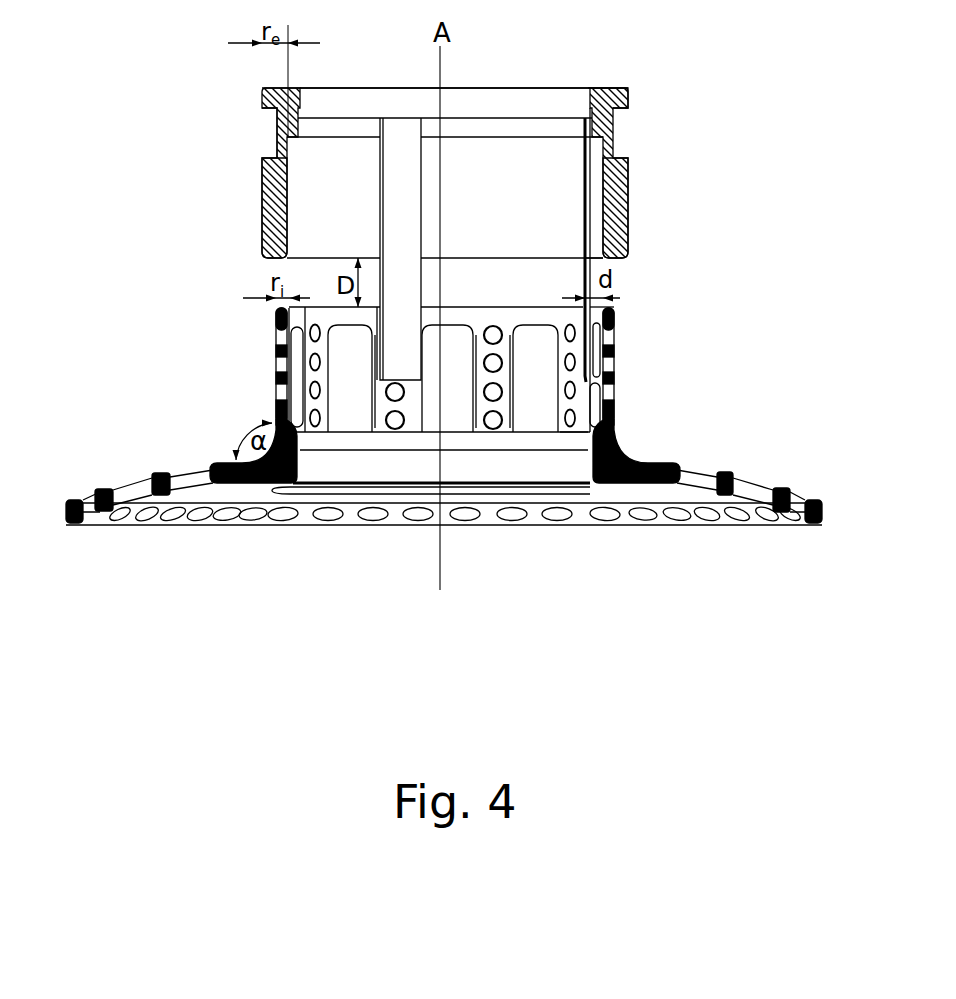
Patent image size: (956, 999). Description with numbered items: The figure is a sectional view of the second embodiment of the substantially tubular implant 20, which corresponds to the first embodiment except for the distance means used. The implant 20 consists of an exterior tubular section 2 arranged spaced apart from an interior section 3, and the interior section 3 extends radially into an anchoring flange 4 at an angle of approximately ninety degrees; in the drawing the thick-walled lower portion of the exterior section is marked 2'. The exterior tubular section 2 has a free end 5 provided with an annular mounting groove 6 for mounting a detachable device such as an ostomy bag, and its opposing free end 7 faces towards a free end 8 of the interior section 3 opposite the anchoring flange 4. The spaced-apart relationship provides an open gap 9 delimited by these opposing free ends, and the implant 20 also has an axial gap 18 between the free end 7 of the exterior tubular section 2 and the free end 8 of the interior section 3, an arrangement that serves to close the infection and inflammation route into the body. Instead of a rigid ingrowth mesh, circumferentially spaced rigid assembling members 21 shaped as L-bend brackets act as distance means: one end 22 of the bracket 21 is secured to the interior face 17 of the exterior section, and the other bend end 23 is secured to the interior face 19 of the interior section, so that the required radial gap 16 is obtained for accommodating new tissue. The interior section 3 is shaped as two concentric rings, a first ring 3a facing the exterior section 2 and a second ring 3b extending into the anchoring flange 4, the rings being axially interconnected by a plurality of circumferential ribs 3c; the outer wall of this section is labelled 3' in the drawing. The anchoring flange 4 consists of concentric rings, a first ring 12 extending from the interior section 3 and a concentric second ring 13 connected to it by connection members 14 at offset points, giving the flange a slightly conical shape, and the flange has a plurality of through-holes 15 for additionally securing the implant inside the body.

The implant 20 is at (173, 83).
The exterior tubular section 2 is at (401, 173).
The cap skirt wall 2' is at (237, 208).
The annular mounting groove 6 is at (278, 128).
The interior face of the exterior tubular section 17 is at (604, 188).
The end of the L-bracket 22 is at (612, 88).
The free end 5 is at (634, 88).
The opposing free end 7 is at (627, 255).
The axial gap 18 is at (595, 263).
The assembling member 21 is at (386, 196).
The open gap 9 is at (275, 278).
The interior section 3 is at (386, 395).
The bellows wall 3' is at (236, 366).
The first ring 3a is at (612, 315).
The second ring 3b is at (508, 442).
The circumferential ribs 3c is at (503, 345).
The interior face of the interior section 19 is at (303, 323).
The bend end of the L-bend bracket 23 is at (605, 380).
The radial gap 16 is at (597, 228).
The free end of the interior section 8 is at (615, 308).
The anchoring flange 4 is at (680, 466).
The first ring 12 is at (640, 483).
The connection members 14 is at (727, 500).
The second ring 13 is at (815, 525).
The through-holes 15 is at (373, 512).